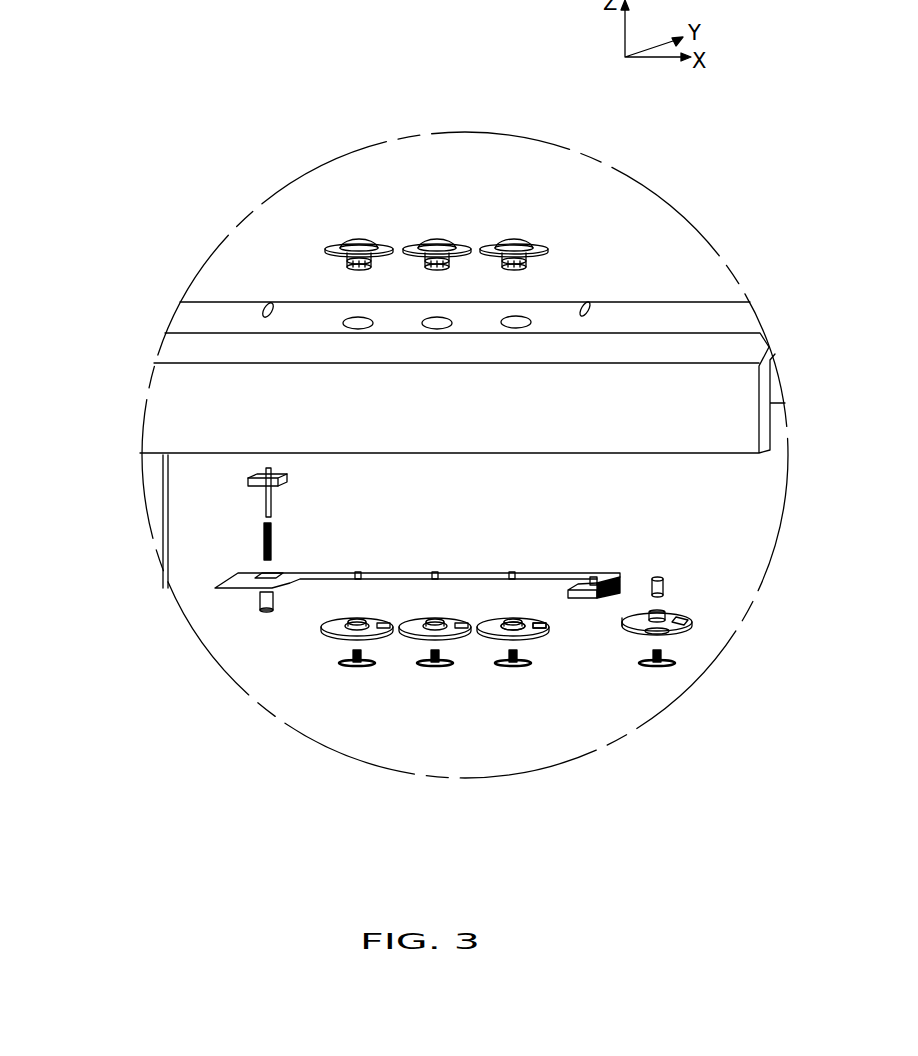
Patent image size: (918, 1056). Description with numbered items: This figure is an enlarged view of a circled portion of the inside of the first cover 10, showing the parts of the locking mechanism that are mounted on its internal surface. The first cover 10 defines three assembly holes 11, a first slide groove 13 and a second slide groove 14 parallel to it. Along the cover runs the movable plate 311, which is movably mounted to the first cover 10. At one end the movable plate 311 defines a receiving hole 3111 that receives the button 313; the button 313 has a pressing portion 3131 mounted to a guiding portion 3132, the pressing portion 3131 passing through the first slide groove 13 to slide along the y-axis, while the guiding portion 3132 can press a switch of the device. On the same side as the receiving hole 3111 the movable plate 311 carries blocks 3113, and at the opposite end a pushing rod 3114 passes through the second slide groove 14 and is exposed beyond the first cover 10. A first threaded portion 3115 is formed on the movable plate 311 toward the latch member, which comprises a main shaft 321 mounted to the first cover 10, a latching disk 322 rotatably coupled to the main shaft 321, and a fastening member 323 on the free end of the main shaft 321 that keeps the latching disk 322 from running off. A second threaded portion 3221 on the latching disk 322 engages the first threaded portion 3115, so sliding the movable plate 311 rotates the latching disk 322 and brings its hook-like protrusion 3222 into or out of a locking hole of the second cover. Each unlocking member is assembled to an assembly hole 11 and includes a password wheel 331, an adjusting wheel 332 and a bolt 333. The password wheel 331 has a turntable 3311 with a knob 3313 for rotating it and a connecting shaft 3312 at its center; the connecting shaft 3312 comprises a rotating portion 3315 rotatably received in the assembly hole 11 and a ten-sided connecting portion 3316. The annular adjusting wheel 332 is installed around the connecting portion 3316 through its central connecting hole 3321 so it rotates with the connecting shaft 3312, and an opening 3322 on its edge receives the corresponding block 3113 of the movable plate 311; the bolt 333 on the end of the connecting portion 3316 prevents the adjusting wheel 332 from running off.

The first cover 10 is at (683, 313).
The assembly hole 11 is at (517, 320).
The first slide groove 13 is at (268, 305).
The second slide groove 14 is at (587, 305).
The password wheel 331 is at (352, 201).
The turntable 3311 is at (488, 245).
The connecting shaft 3312 is at (550, 173).
The knob 3313 is at (521, 243).
The rotating portion 3315 is at (330, 253).
The connecting portion 3316 is at (352, 266).
The button 313 is at (188, 574).
The pressing portion 3131 is at (265, 483).
The guiding portion 3132 is at (267, 502).
The movable plate 311 is at (379, 608).
The receiving hole 3111 is at (267, 575).
The block 3113 is at (588, 710).
The pushing rod 3114 is at (593, 575).
The first threaded portion 3115 is at (601, 598).
The adjusting wheel 332 is at (437, 739).
The connecting hole 3321 is at (540, 630).
The opening 3322 is at (548, 632).
The bolt 333 is at (514, 663).
The main shaft 321 is at (667, 587).
The latching disk 322 is at (688, 698).
The second threaded portion 3221 is at (625, 625).
The protrusion 3222 is at (718, 640).
The fastening member 323 is at (665, 668).